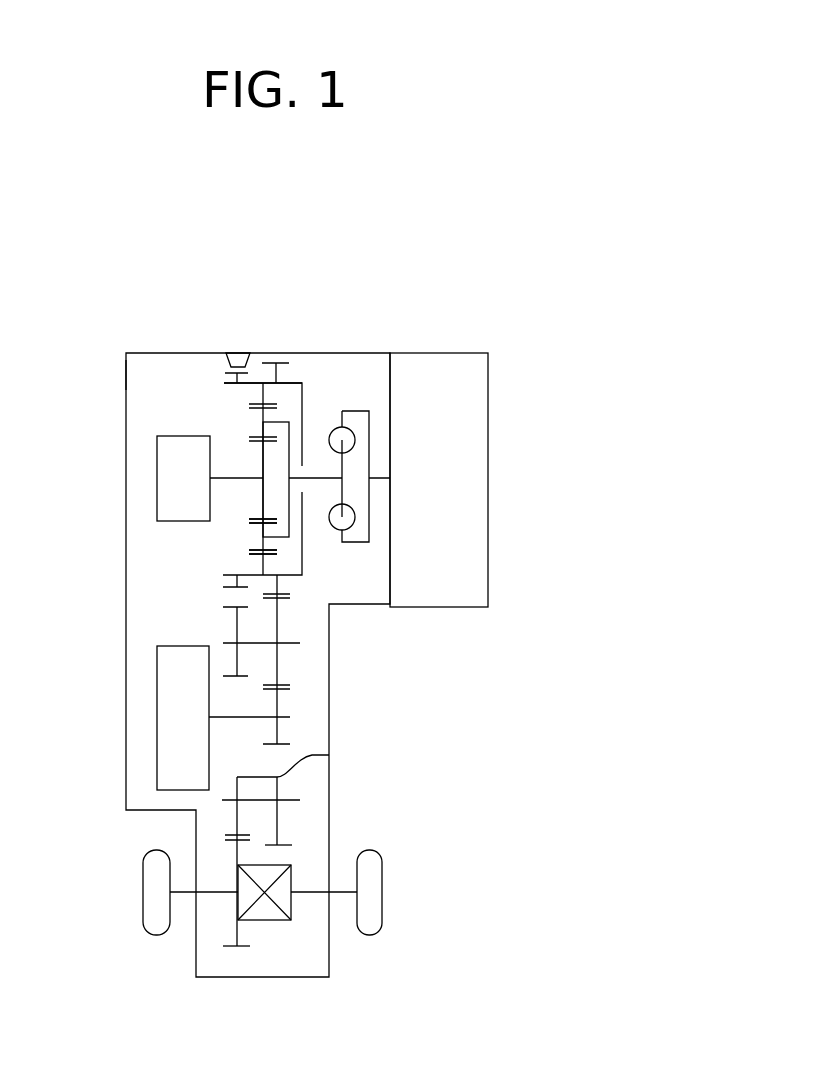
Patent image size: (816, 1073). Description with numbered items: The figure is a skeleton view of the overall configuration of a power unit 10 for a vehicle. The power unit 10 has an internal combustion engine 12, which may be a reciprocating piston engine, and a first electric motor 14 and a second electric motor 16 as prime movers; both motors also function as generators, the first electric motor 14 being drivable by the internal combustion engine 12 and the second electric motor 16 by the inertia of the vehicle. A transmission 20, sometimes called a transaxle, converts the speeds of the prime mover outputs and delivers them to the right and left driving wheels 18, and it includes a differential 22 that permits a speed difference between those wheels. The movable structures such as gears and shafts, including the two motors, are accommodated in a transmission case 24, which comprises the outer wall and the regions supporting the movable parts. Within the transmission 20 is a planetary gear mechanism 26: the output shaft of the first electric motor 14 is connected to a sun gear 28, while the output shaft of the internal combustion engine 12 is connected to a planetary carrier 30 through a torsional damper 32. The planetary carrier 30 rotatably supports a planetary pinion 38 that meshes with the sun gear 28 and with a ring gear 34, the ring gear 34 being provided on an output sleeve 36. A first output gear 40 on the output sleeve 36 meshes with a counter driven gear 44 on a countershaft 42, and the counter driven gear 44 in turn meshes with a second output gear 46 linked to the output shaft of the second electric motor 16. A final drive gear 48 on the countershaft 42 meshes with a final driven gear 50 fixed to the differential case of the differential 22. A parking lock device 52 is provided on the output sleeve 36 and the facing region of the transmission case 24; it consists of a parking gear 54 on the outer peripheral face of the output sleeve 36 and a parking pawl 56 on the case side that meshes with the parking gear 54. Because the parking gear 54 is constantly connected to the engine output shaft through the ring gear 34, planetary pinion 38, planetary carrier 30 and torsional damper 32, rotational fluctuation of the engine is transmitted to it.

The power unit 10 is at (362, 285).
The internal combustion engine 12 is at (469, 342).
The first electric motor 14 is at (170, 453).
The second electric motor 16 is at (168, 720).
The driving wheels 18 is at (148, 908).
The transmission 20 is at (151, 344).
The differential 22 is at (263, 922).
The transmission case 24 is at (127, 373).
The planetary gear mechanism 26 is at (318, 369).
The sun gear 28 is at (263, 493).
The planetary carrier 30 is at (290, 438).
The torsional damper 32 is at (369, 396).
The ring gear 34 is at (263, 562).
The output sleeve 36 is at (248, 384).
The planetary pinion 38 is at (262, 543).
The first output gear 40 is at (278, 580).
The countershaft 42 is at (298, 643).
The counter driven gear 44 is at (280, 668).
The second output gear 46 is at (280, 729).
The final drive gear 48 is at (236, 620).
The final driven gear 50 is at (236, 939).
The parking lock device 52 is at (265, 341).
The parking gear 54 is at (225, 374).
The parking pawl 56 is at (228, 357).